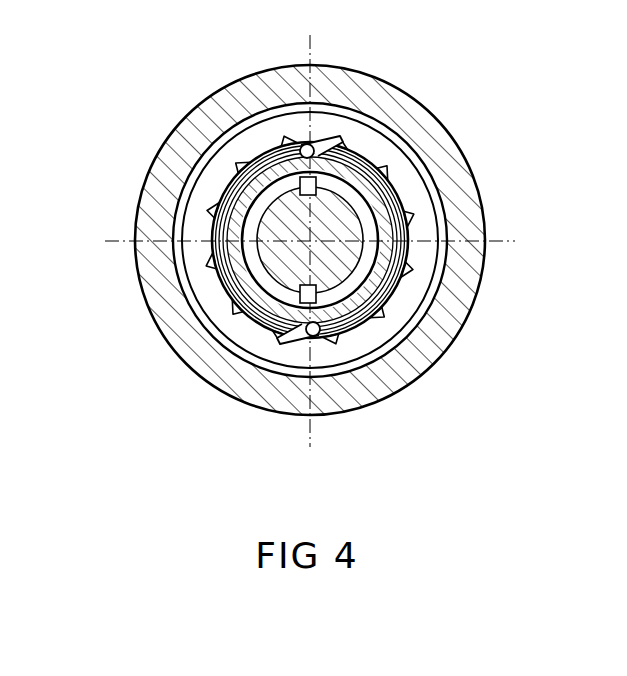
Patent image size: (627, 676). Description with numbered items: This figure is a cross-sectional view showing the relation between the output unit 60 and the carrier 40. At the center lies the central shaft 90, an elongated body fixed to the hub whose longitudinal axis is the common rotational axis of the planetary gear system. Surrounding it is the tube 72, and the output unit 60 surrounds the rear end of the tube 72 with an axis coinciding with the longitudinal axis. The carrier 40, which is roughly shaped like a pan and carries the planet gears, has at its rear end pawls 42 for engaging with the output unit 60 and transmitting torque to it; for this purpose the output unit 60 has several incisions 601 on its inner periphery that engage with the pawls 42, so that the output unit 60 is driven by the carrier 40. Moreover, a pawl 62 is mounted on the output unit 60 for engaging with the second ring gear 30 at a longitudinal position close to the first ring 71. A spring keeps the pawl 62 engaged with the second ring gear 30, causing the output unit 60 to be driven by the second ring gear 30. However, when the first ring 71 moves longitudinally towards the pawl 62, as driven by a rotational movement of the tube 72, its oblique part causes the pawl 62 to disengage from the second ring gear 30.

The second ring gear 30 is at (212, 107).
The carrier 40 is at (403, 278).
The pawls 42 is at (330, 135).
The output unit 60 is at (430, 217).
The incisions 601 is at (388, 163).
The pawl 62 is at (200, 158).
The first ring 71 is at (343, 323).
The tube 72 is at (290, 253).
The central shaft 90 is at (252, 316).